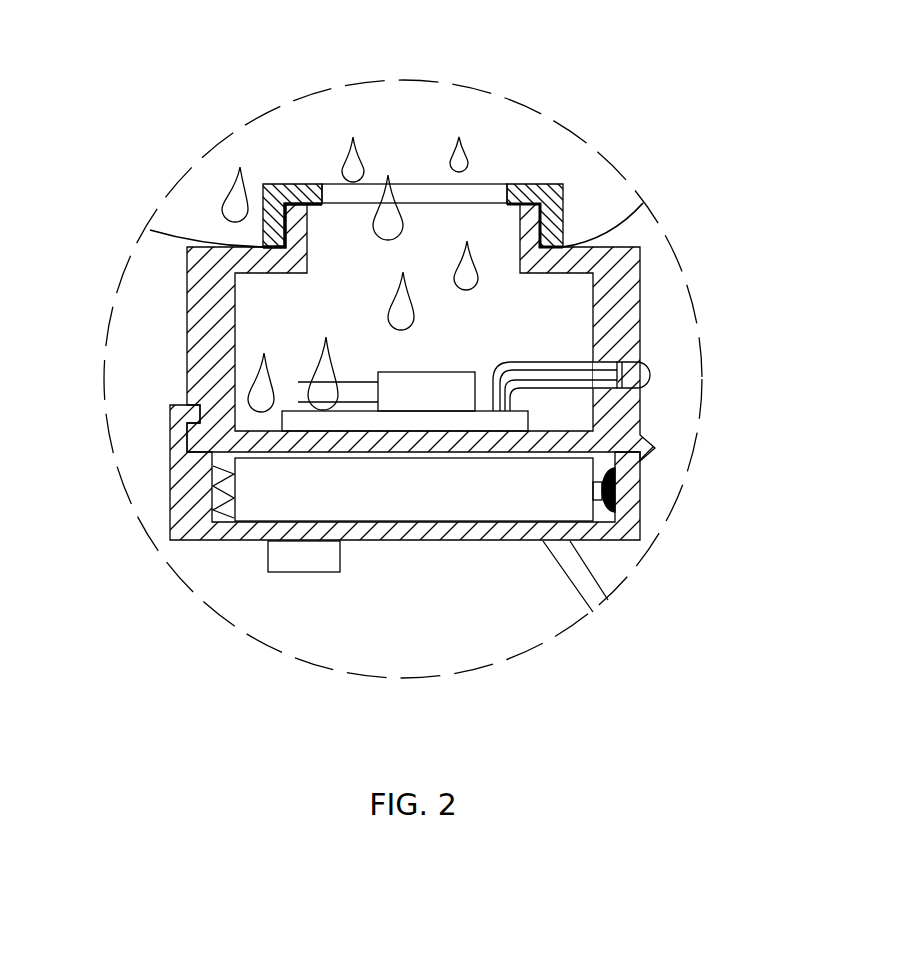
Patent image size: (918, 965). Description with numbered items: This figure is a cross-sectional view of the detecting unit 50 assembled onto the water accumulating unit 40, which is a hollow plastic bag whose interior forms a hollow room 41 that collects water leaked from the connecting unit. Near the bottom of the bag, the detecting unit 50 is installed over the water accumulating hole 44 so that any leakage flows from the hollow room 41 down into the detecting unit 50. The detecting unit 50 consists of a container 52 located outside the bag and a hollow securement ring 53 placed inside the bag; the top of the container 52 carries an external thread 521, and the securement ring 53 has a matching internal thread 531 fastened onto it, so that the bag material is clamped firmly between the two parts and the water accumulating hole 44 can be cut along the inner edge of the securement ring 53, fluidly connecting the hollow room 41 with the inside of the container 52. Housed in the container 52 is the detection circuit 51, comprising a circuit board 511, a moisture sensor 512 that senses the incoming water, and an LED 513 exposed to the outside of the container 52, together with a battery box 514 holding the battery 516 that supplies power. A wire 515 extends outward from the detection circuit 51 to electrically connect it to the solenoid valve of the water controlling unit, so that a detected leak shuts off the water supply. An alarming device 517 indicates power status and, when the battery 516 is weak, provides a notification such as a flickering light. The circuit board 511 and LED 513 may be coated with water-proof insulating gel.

The water accumulating unit 40 is at (171, 240).
The hollow room 41 is at (341, 112).
The water accumulating hole 44 is at (500, 208).
The detecting unit 50 is at (359, 567).
The detection circuit 51 is at (552, 376).
The container 52 is at (197, 350).
The hollow securement ring 53 is at (283, 196).
The circuit board 511 is at (517, 420).
The moisture sensor 512 is at (463, 385).
The LED 513 is at (628, 373).
The battery box 514 is at (205, 532).
The wire 515 is at (489, 532).
The battery 516 is at (402, 490).
The alarming device 517 is at (297, 558).
The external thread 521 is at (543, 227).
The internal thread 531 is at (292, 225).